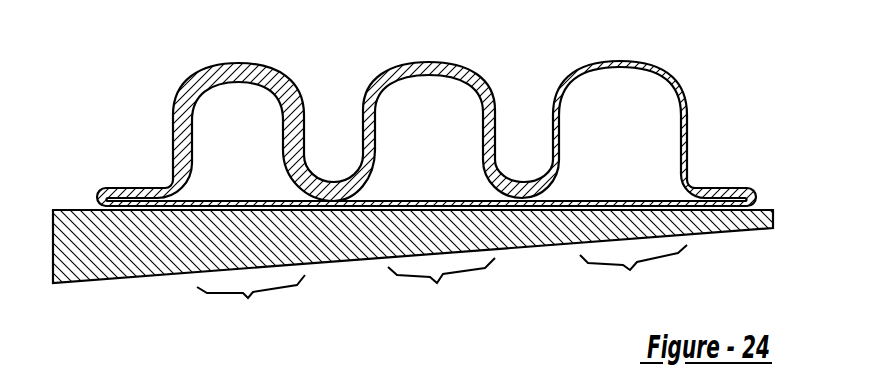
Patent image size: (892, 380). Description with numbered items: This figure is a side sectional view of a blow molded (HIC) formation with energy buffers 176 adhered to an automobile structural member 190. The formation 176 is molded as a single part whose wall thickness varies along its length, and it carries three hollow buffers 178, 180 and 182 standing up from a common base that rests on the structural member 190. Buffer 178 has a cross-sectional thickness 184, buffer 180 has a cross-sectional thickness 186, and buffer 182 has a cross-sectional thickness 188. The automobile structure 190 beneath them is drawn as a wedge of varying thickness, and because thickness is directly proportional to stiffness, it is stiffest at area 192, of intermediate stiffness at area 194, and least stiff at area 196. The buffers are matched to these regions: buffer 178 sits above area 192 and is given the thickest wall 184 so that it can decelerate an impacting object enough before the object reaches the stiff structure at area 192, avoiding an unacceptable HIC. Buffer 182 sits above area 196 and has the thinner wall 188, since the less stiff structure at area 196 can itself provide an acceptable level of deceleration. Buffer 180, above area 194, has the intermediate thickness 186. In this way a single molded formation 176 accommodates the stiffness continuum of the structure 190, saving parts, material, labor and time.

The blow molded (HIC) formation with energy buffers 176 is at (124, 73).
The buffer 178 is at (277, 70).
The buffer 180 is at (463, 71).
The buffer 182 is at (665, 71).
The cross-sectional thickness 184 is at (218, 101).
The cross-sectional thickness 186 is at (410, 90).
The cross-sectional thickness 188 is at (594, 83).
The automobile structural member 190 is at (52, 224).
The area 192 is at (251, 306).
The area 194 is at (441, 286).
The area 196 is at (633, 274).